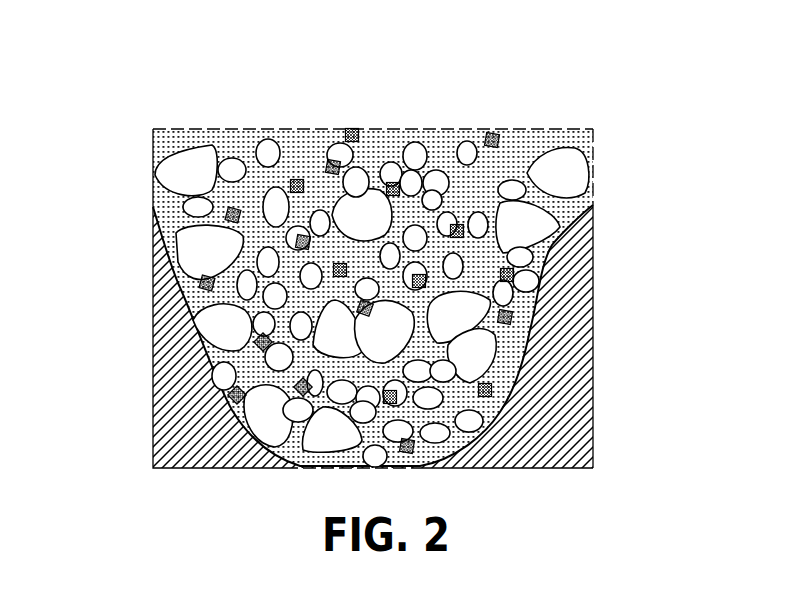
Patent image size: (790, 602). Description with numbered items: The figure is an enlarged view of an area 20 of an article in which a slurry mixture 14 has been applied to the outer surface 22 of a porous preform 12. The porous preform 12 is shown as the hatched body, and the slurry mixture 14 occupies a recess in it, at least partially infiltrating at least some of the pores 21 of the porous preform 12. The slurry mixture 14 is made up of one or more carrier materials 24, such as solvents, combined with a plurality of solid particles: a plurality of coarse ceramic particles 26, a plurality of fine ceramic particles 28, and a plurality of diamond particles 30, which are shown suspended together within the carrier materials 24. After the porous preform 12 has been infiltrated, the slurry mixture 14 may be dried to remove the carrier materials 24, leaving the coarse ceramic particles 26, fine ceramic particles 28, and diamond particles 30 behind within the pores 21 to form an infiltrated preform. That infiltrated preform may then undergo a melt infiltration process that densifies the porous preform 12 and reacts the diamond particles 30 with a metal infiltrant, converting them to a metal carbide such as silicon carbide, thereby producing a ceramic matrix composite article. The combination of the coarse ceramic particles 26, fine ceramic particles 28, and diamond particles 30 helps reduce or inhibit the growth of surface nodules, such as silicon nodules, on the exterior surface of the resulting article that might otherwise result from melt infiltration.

The area 20 is at (364, 239).
The porous preform 12 is at (585, 336).
The slurry mixture 14 is at (301, 120).
The pores 21 is at (178, 310).
The outer surface 22 is at (592, 198).
The carrier materials 24 is at (162, 140).
The coarse ceramic particles 26 is at (573, 157).
The fine ceramic particles 28 is at (470, 155).
The diamond particles 30 is at (357, 128).